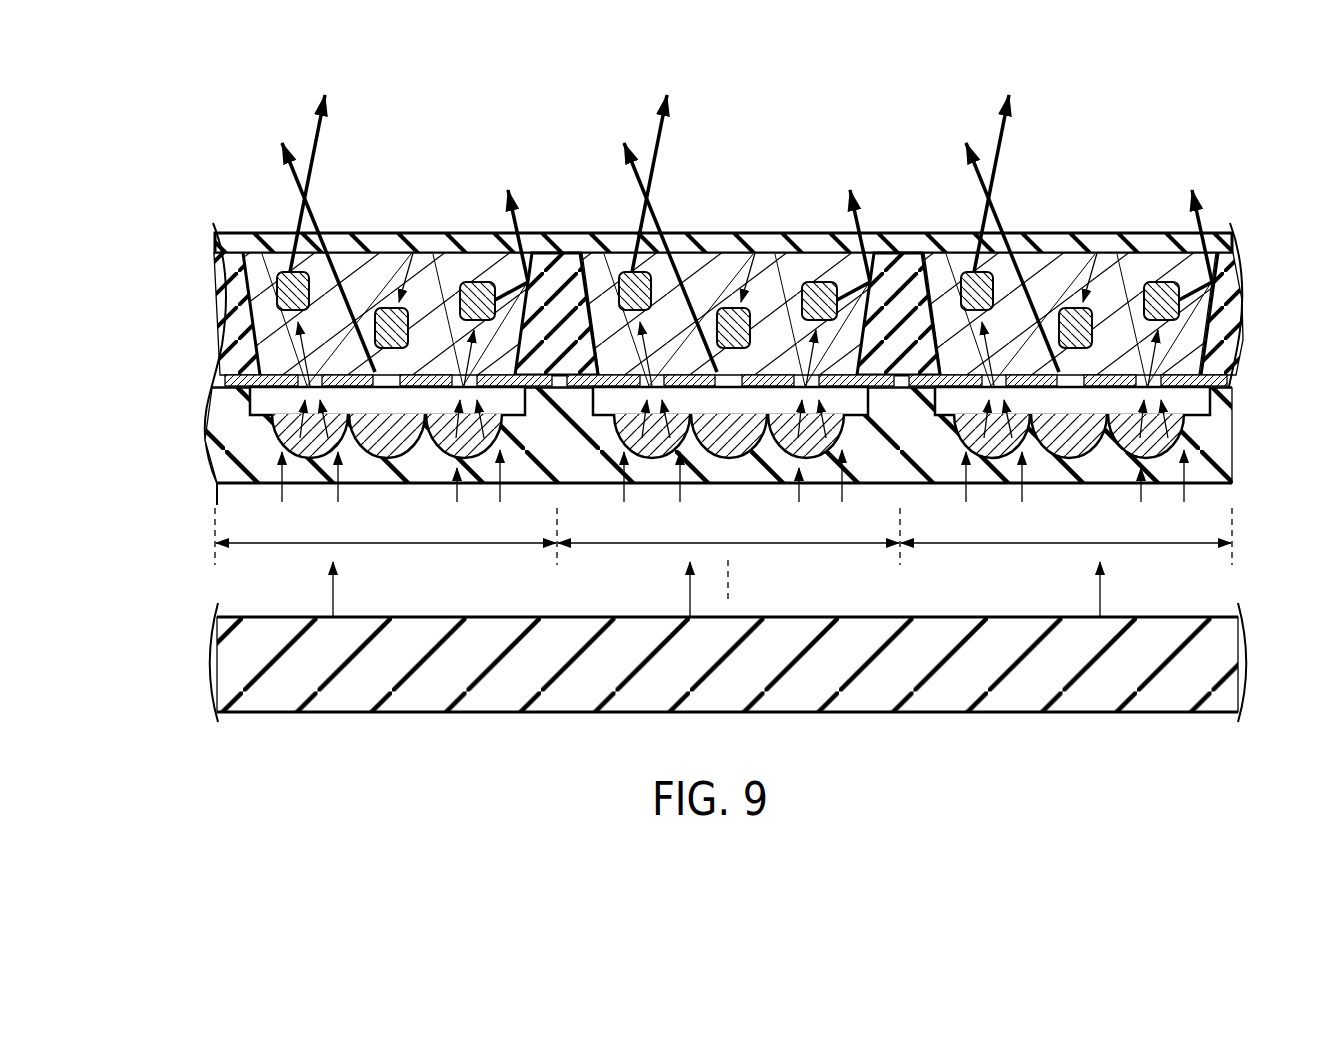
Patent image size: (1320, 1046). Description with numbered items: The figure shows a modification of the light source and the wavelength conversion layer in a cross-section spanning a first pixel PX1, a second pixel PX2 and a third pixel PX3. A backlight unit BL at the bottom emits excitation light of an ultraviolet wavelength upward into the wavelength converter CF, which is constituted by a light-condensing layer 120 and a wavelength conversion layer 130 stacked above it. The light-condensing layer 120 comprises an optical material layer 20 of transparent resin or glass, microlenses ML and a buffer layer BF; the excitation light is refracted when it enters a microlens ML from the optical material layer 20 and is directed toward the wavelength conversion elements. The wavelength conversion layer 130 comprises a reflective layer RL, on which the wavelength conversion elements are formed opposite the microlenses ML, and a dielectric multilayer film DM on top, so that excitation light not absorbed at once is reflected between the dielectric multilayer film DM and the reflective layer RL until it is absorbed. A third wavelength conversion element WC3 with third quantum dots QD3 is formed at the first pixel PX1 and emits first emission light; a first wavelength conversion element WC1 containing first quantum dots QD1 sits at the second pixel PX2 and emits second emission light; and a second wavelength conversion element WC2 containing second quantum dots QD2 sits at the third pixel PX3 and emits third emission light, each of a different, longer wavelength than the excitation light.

The wavelength converter CF is at (190, 188).
The dielectric multilayer film DM is at (1225, 245).
The wavelength conversion layer 130 is at (190, 312).
The light-condensing layer 120 is at (190, 427).
The reflective layer RL is at (1215, 379).
The buffer layer BF is at (1192, 400).
The optical material layer 20 is at (1210, 467).
The microlens ML is at (1167, 459).
The backlight unit BL is at (1200, 688).
The first quantum dot QD1 is at (629, 271).
The second quantum dot QD2 is at (971, 271).
The third quantum dot QD3 is at (287, 271).
The first wavelength conversion element WC1 is at (721, 184).
The second wavelength conversion element WC2 is at (1063, 184).
The third wavelength conversion element WC3 is at (379, 184).
The first pixel PX1 is at (386, 536).
The second pixel PX2 is at (729, 554).
The third pixel PX3 is at (1066, 536).